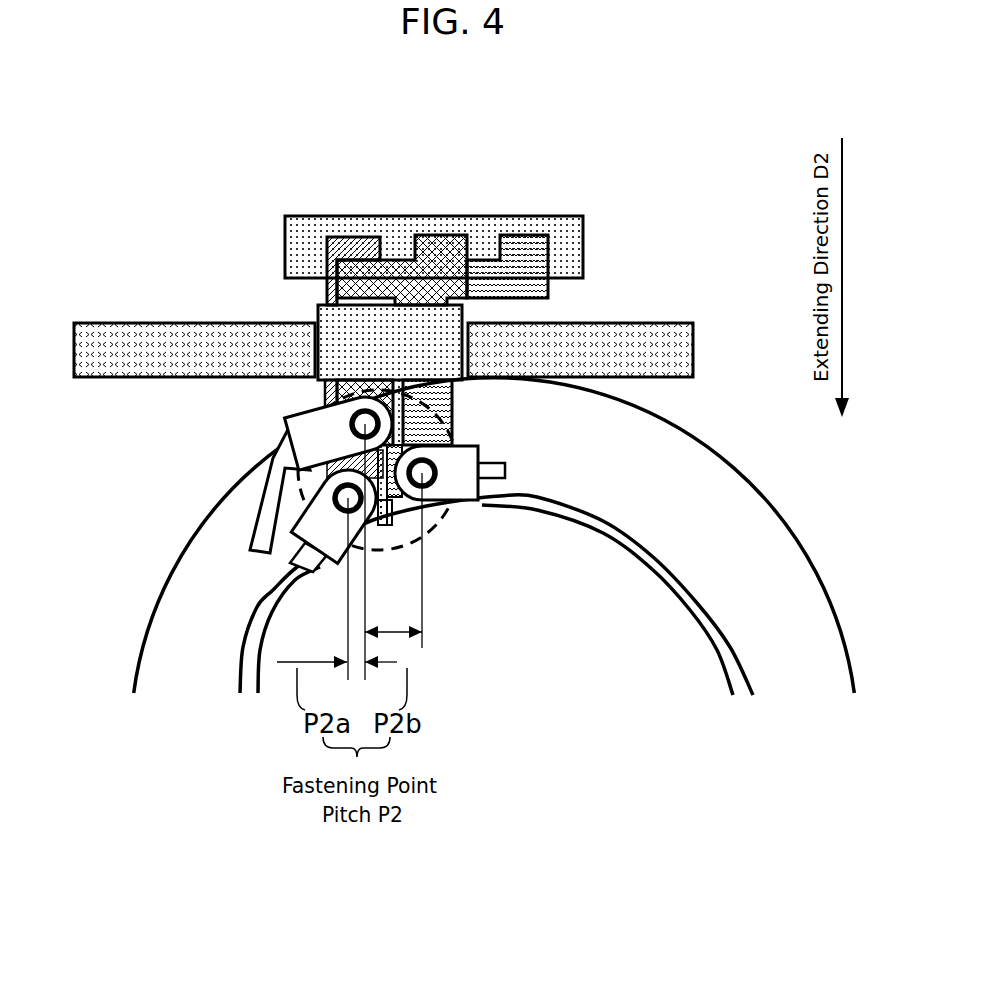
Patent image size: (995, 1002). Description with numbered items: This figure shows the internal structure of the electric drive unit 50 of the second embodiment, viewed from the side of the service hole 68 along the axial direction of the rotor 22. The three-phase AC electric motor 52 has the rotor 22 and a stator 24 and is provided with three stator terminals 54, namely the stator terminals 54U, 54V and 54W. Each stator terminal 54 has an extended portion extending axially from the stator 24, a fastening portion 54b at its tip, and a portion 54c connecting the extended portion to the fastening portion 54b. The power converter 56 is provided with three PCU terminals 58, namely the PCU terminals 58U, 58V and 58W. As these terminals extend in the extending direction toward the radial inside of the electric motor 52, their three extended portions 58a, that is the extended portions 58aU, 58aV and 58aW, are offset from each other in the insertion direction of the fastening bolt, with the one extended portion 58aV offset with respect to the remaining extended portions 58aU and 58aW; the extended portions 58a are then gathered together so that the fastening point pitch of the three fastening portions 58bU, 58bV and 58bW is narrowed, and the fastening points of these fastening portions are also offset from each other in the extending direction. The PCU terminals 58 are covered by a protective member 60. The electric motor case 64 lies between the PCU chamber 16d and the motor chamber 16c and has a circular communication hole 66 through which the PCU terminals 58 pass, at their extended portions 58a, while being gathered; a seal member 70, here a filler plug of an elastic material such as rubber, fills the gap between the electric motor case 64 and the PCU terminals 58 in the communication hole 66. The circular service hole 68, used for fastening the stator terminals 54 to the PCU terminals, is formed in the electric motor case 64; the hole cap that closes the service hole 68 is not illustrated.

The electric drive unit 50 is at (721, 123).
The electric motor 52 is at (819, 547).
The stator terminals 54 is at (482, 893).
The U-phase stator terminal 54U is at (250, 572).
The V-phase stator terminal 54V is at (285, 575).
The W-phase stator terminal 54W is at (482, 530).
The fastening portion 54b is at (330, 433).
The connecting portion 54c is at (267, 508).
The power converter 56 is at (564, 203).
The PCU terminals 58 is at (482, 155).
The U-phase PCU terminal 58U is at (345, 212).
The V-phase PCU terminal 58V is at (430, 212).
The W-phase PCU terminal 58W is at (513, 212).
The extended portions 58a is at (567, 295).
The U-phase extended portion 58aU is at (333, 248).
The V-phase extended portion 58aV is at (345, 284).
The W-phase extended portion 58aW is at (515, 262).
The U-phase terminal second portion 58bU is at (330, 476).
The V-phase terminal second portion 58bV is at (330, 397).
The W-phase terminal second portion 58bW is at (430, 428).
The protective member 60 is at (403, 392).
The electric motor case 64 is at (117, 337).
The communication hole 66 is at (317, 382).
The service hole 68 is at (433, 520).
The seal member 70 is at (415, 352).
The motor chamber 16c is at (115, 412).
The PCU chamber 16d is at (148, 295).
The rotor 22 is at (683, 642).
The stator 24 is at (780, 592).